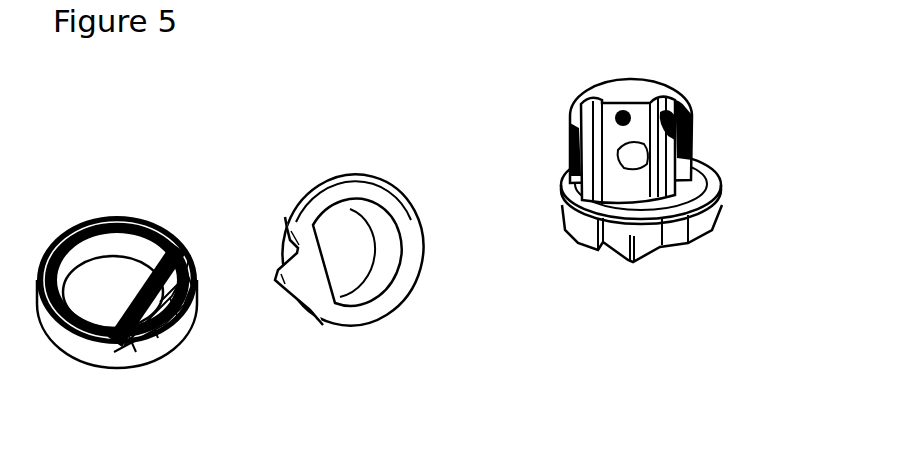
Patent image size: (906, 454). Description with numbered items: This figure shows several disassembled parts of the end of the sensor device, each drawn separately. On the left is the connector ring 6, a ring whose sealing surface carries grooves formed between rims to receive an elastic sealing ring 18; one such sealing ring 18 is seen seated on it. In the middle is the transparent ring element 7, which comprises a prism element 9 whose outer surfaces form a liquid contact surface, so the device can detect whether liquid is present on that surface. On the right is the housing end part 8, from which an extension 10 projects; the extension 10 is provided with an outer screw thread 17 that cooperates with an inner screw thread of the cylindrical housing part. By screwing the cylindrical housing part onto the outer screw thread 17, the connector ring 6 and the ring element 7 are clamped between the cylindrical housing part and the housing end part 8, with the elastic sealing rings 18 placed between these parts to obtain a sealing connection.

The connector ring 6 is at (83, 350).
The transparent ring element 7 is at (333, 202).
The housing end part 8 is at (590, 235).
The prism element 9 is at (288, 288).
The extension 10 is at (662, 105).
The outer screw thread 17 is at (685, 132).
The elastic sealing rings 18 is at (168, 229).